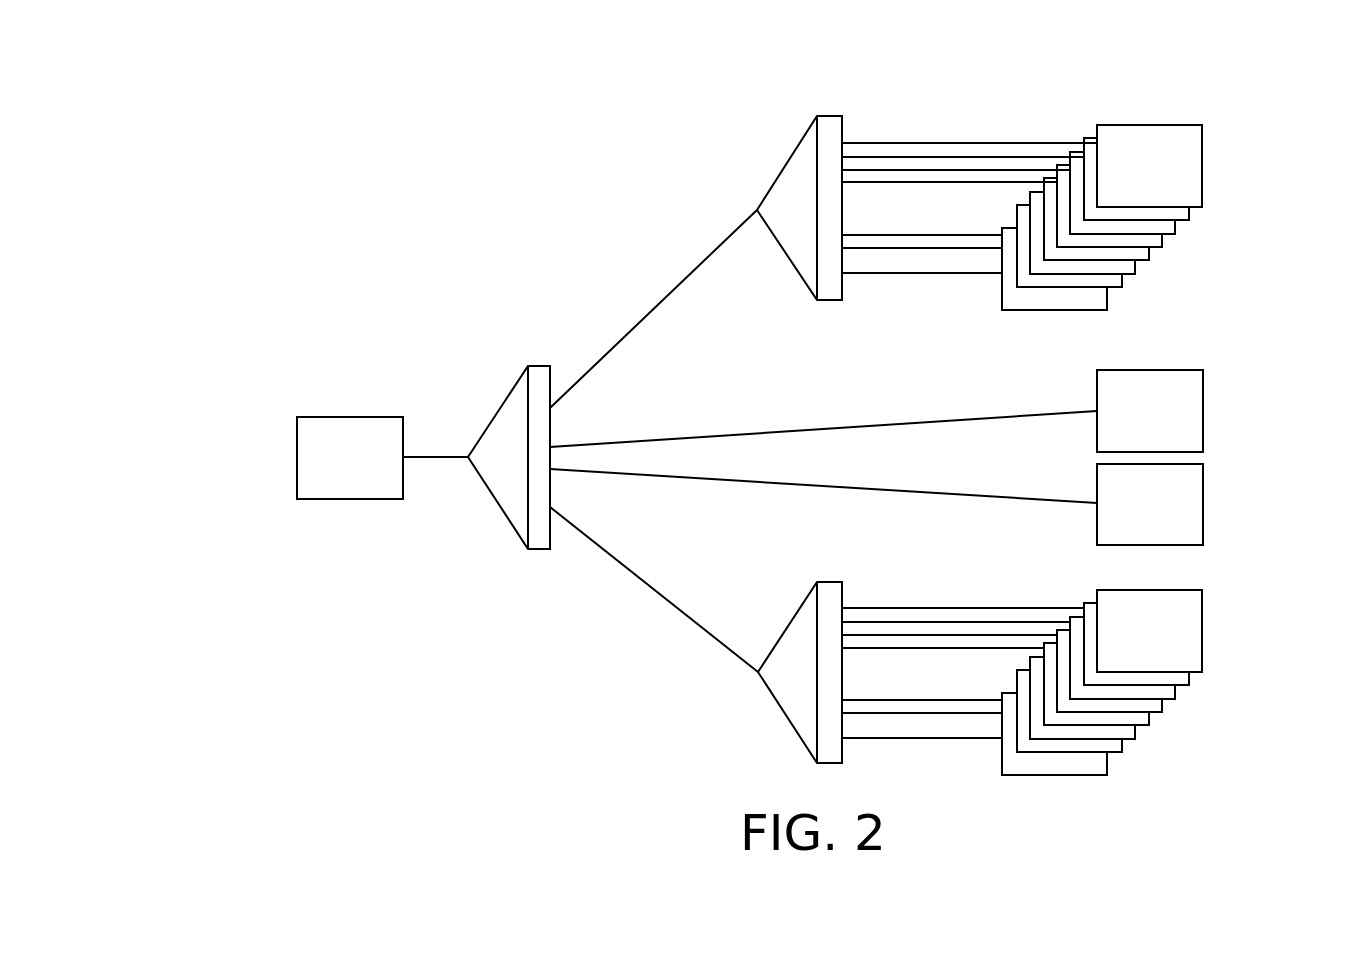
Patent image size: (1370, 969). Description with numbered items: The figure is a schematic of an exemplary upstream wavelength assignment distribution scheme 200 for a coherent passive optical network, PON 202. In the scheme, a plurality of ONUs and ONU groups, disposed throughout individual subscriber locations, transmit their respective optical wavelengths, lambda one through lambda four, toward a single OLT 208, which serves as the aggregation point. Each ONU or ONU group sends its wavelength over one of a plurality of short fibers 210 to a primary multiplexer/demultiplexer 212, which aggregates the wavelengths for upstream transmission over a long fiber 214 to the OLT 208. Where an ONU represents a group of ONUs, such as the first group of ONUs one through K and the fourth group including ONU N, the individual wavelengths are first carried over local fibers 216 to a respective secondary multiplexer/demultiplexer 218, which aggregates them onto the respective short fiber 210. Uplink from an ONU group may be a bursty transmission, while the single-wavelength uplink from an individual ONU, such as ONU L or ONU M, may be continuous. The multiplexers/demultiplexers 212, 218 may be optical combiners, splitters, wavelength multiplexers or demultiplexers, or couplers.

The upstream wavelength assignment distribution scheme 200 is at (375, 248).
The PON 202 is at (260, 457).
The OLT 208 is at (325, 489).
The short fiber 210 is at (623, 340).
The primary multiplexer/demultiplexer 212 is at (493, 470).
The long fiber 214 is at (438, 461).
The local fiber 216 is at (941, 108).
The secondary multiplexer/demultiplexer 218 is at (782, 214).